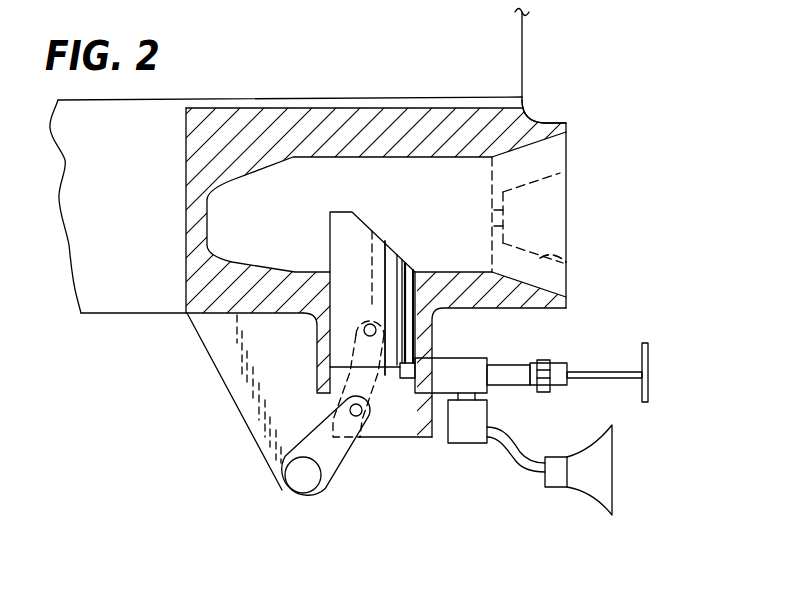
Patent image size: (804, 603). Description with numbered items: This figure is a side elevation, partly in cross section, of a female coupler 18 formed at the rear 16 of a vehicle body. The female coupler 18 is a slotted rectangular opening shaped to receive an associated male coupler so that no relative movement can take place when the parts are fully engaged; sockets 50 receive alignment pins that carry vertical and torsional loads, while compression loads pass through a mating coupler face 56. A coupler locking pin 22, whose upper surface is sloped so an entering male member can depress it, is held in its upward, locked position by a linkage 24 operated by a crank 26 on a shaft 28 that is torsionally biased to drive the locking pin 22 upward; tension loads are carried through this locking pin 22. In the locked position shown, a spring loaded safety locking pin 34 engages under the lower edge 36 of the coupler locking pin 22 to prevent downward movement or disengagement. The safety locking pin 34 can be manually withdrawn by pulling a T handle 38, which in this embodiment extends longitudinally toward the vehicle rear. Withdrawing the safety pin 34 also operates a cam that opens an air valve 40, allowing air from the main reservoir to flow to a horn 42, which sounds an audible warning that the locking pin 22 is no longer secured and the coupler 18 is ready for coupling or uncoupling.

The rear of vehicle body 16 is at (530, 61).
The female coupler 18 is at (581, 185).
The coupler locking pin 22 is at (345, 254).
The linkage 24 is at (368, 376).
The crank 26 is at (345, 468).
The shaft 28 is at (298, 483).
The safety locking pin 34 is at (410, 373).
The lower edge of coupler locking pin 36 is at (390, 378).
The T handle 38 is at (649, 382).
The air valve 40 is at (481, 415).
The horn 42 is at (586, 490).
The socket 50 is at (566, 262).
The coupler face 56 is at (568, 124).